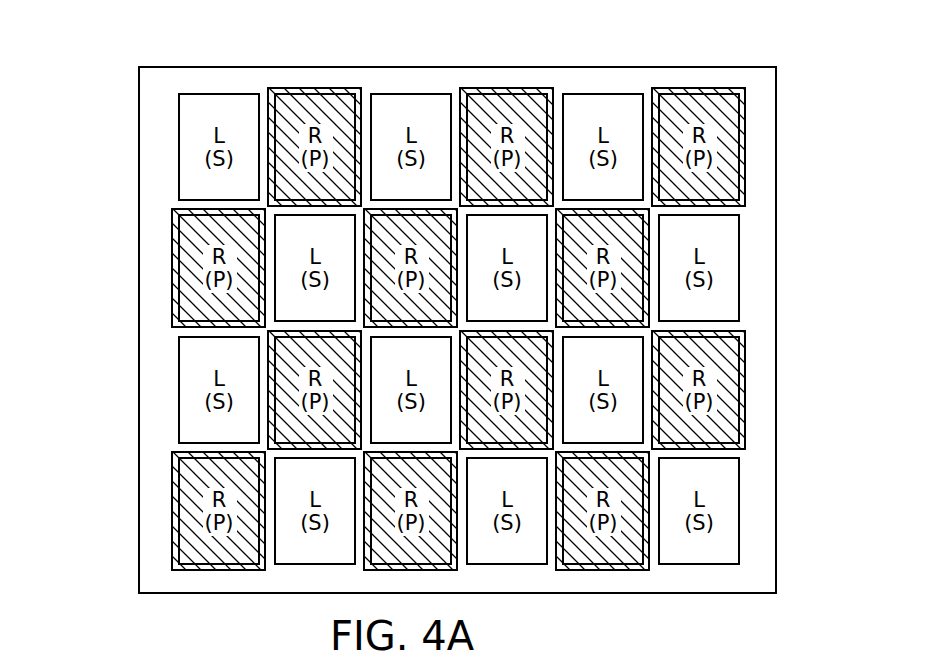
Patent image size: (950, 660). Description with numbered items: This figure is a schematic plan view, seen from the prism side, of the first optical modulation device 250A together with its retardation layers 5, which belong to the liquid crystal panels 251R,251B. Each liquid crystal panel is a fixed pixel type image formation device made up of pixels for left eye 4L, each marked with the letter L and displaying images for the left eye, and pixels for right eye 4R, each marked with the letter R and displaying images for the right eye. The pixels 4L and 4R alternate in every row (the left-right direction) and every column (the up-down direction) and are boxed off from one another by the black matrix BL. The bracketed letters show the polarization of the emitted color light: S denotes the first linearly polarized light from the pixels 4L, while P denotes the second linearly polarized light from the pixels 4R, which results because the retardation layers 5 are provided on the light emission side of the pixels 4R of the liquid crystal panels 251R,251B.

The first optical modulation device 250A is at (153, 50).
The pixel for left eye 4L is at (210, 93).
The pixel for right eye 4R is at (326, 90).
The black matrix BL is at (262, 92).
The liquid crystal panels 251R,251B is at (748, 82).
The retardation layer 5 is at (173, 266).